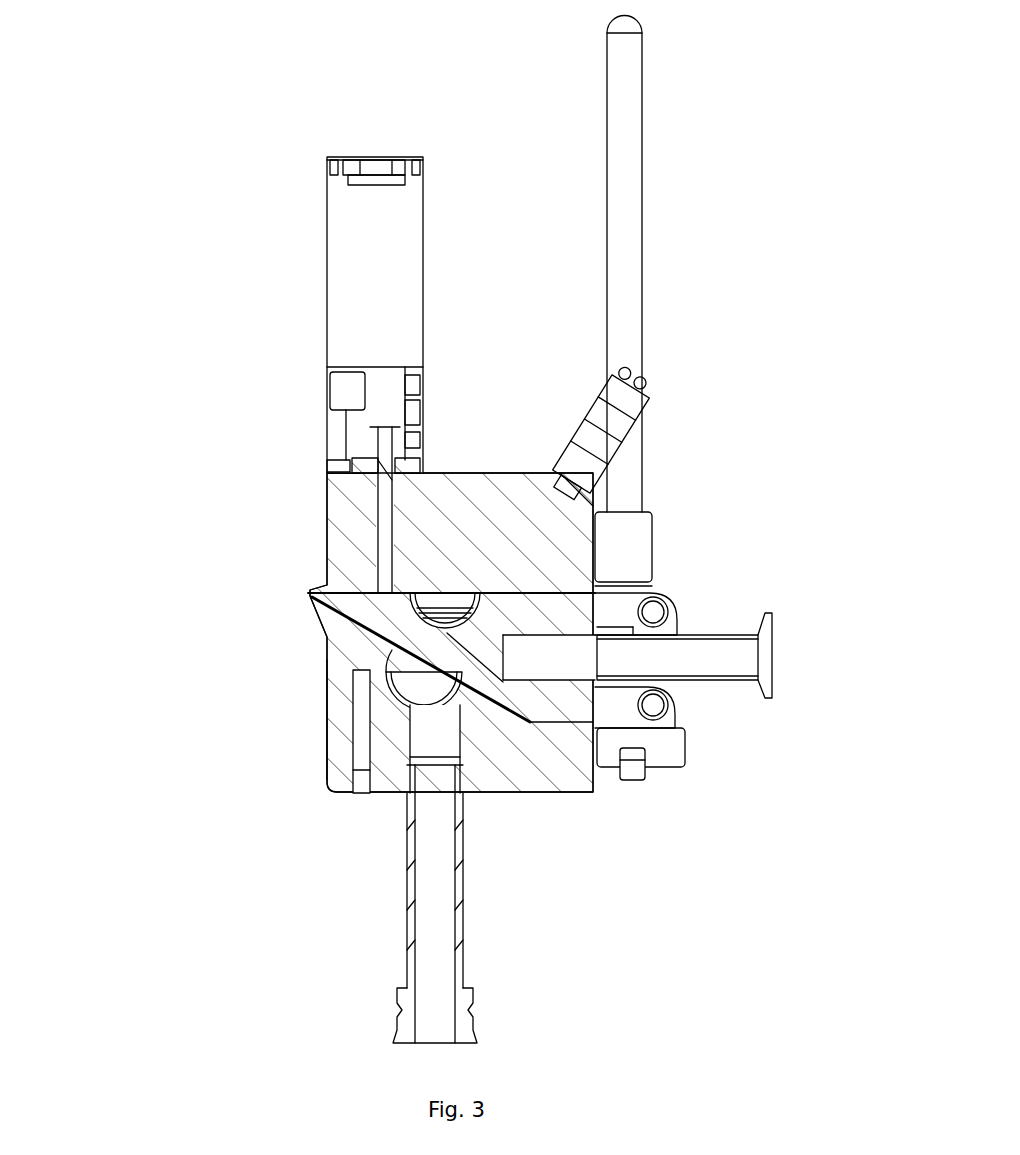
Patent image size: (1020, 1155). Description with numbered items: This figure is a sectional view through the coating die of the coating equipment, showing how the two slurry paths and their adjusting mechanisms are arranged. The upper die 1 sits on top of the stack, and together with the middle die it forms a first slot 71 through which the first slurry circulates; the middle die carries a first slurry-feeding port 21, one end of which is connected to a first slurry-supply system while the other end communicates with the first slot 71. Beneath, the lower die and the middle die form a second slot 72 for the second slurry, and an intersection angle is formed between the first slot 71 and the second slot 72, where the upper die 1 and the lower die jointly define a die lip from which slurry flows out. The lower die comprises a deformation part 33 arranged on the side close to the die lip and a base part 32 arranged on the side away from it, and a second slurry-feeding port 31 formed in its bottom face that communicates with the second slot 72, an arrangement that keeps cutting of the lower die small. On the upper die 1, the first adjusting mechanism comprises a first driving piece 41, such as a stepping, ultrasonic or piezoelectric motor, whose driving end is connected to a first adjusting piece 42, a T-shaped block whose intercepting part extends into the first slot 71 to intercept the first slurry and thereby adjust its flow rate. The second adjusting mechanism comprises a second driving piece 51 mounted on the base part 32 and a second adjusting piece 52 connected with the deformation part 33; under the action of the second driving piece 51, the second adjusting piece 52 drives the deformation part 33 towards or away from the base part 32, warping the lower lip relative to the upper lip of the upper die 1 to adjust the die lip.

The upper die 1 is at (574, 548).
The first slurry-feeding port 21 is at (743, 605).
The second slurry-feeding port 31 is at (531, 907).
The base part 32 is at (310, 873).
The deformation part 33 is at (246, 725).
The first driving piece 41 is at (247, 305).
The first adjusting piece 42 is at (236, 422).
The second driving piece 51 is at (752, 821).
The second adjusting piece 52 is at (255, 781).
The first slot 71 is at (331, 504).
The second slot 72 is at (294, 664).